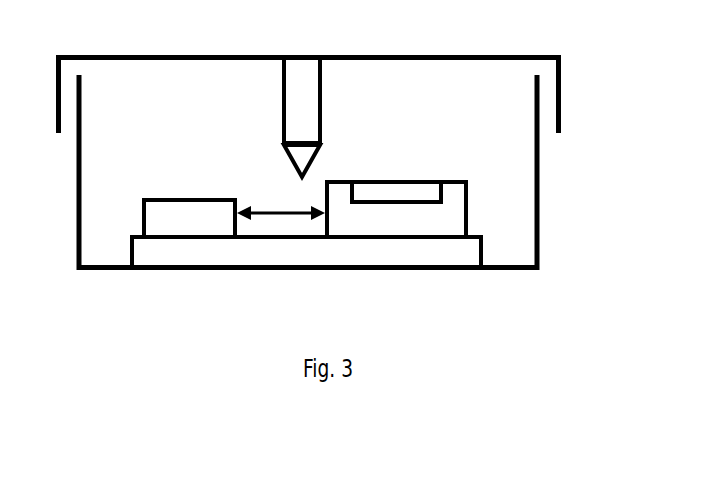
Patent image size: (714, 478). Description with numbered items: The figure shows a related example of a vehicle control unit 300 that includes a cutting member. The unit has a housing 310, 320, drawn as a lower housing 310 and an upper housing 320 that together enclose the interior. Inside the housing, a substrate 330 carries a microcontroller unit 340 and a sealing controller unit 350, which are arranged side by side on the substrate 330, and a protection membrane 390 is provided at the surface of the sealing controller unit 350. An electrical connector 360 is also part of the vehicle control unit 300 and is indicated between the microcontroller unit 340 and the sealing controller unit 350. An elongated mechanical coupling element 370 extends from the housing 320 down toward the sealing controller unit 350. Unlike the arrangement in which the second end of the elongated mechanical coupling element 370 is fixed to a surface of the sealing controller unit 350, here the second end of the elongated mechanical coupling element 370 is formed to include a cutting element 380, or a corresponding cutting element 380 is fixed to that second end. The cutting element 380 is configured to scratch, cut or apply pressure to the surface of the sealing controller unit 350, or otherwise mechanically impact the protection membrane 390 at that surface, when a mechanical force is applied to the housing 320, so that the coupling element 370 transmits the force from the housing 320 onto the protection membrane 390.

The vehicle control unit 300 is at (487, 21).
The housing 310 is at (537, 268).
The housing 320 is at (150, 55).
The substrate 330 is at (132, 235).
The microcontroller unit 340 is at (195, 198).
The sealing controller unit 350 is at (468, 212).
The electrical connector 360 is at (280, 210).
The elongated mechanical coupling element 370 is at (282, 102).
The cutting element 380 is at (315, 158).
The protection membrane 390 is at (415, 182).